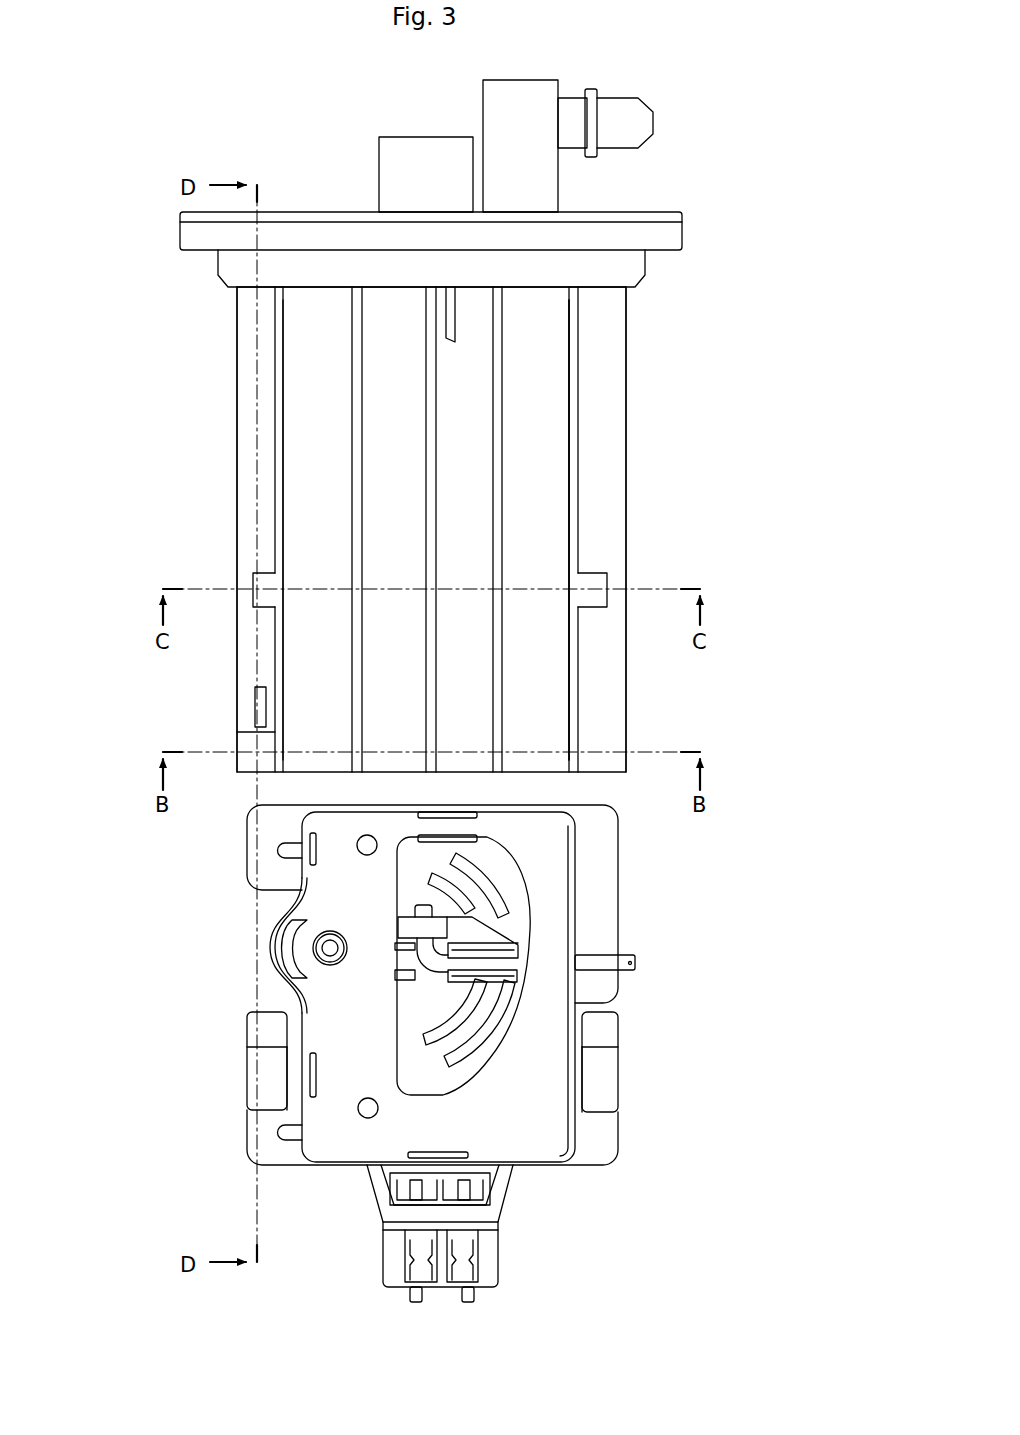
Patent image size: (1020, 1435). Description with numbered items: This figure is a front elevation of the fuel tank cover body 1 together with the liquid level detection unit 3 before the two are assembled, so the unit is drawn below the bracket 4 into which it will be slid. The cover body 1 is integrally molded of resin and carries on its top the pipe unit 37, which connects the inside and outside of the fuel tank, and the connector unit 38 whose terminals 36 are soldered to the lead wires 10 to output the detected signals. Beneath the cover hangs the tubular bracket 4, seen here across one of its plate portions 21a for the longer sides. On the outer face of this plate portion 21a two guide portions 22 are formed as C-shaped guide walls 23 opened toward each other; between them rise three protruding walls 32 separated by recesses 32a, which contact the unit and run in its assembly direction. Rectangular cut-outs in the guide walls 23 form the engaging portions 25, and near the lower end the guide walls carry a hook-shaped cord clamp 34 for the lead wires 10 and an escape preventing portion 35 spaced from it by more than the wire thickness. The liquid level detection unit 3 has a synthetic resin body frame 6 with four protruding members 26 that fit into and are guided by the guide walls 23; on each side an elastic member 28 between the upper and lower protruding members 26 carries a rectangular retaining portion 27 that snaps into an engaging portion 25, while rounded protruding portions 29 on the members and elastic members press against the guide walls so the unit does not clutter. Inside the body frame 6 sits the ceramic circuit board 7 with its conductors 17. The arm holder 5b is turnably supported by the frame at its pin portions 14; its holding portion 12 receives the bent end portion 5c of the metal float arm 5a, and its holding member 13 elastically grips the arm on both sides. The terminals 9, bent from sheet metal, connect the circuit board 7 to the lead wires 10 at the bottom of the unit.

The fuel tank cover body 1 is at (650, 188).
The liquid level detection unit 3 is at (591, 1186).
The bracket 4 is at (548, 482).
The float arm 5a is at (605, 966).
The arm holder 5b is at (487, 935).
The end portion 5c is at (417, 906).
The body frame 6 is at (346, 1145).
The circuit board 7 is at (493, 865).
The terminals 9 is at (405, 1182).
The lead wires 10 is at (412, 1295).
The holding portion 12 is at (405, 917).
The holding member 13 is at (515, 952).
The pin portions 14 is at (313, 948).
The conductors 17 is at (425, 1017).
The plate portions for the longer sides 21a is at (545, 383).
The guide portions 22 is at (184, 549).
The guide walls 23 is at (248, 405).
The engaging portions 25 is at (262, 607).
The protruding members 26 is at (268, 862).
The retaining portions 27 is at (262, 1073).
The elastic member 28 is at (270, 1098).
The rounded protruding portions 29 is at (273, 850).
The protruding walls 32 is at (427, 327).
The recesses 32a is at (310, 527).
The cord clamp 34 is at (245, 742).
The escape preventing portion 35 is at (256, 695).
The terminals 36 is at (456, 330).
The pipe unit 37 is at (510, 103).
The connector unit 38 is at (405, 170).